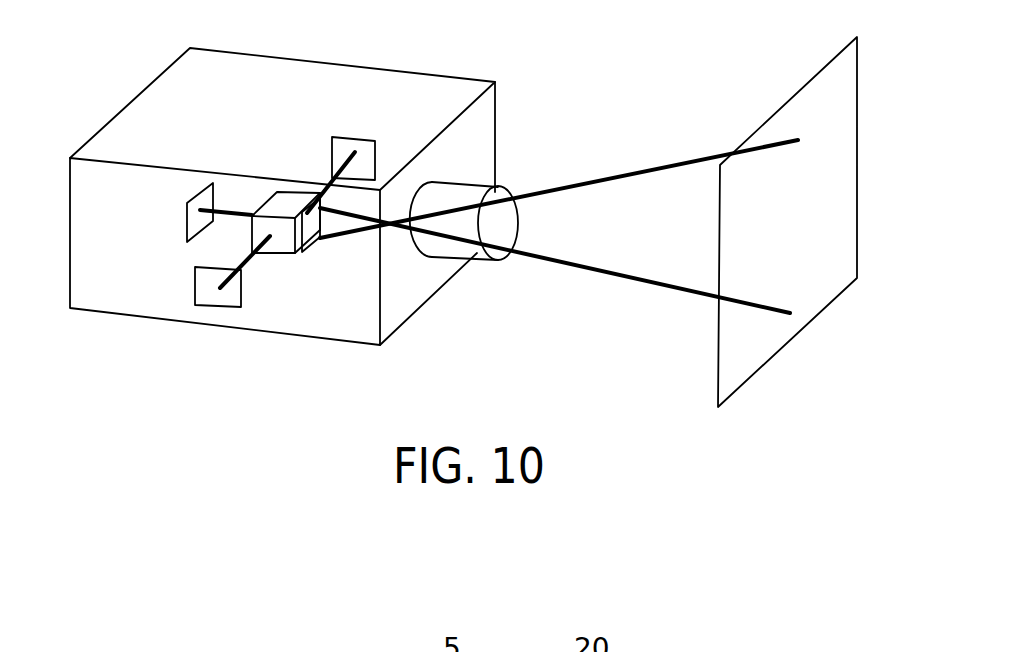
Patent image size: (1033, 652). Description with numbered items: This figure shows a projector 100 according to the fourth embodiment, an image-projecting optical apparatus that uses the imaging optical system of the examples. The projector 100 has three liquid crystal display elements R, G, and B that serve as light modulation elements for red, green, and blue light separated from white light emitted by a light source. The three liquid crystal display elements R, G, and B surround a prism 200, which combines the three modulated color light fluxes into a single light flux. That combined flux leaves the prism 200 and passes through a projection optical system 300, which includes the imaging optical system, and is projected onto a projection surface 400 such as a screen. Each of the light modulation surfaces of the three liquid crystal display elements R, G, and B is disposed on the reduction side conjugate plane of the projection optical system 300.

The projector 100 is at (127, 103).
The liquid crystal display element G is at (186, 218).
The liquid crystal display element B is at (357, 137).
The liquid crystal display element R is at (192, 288).
The prism 200 is at (293, 256).
The projection optical system 300 is at (470, 258).
The projection surface 400 is at (822, 118).